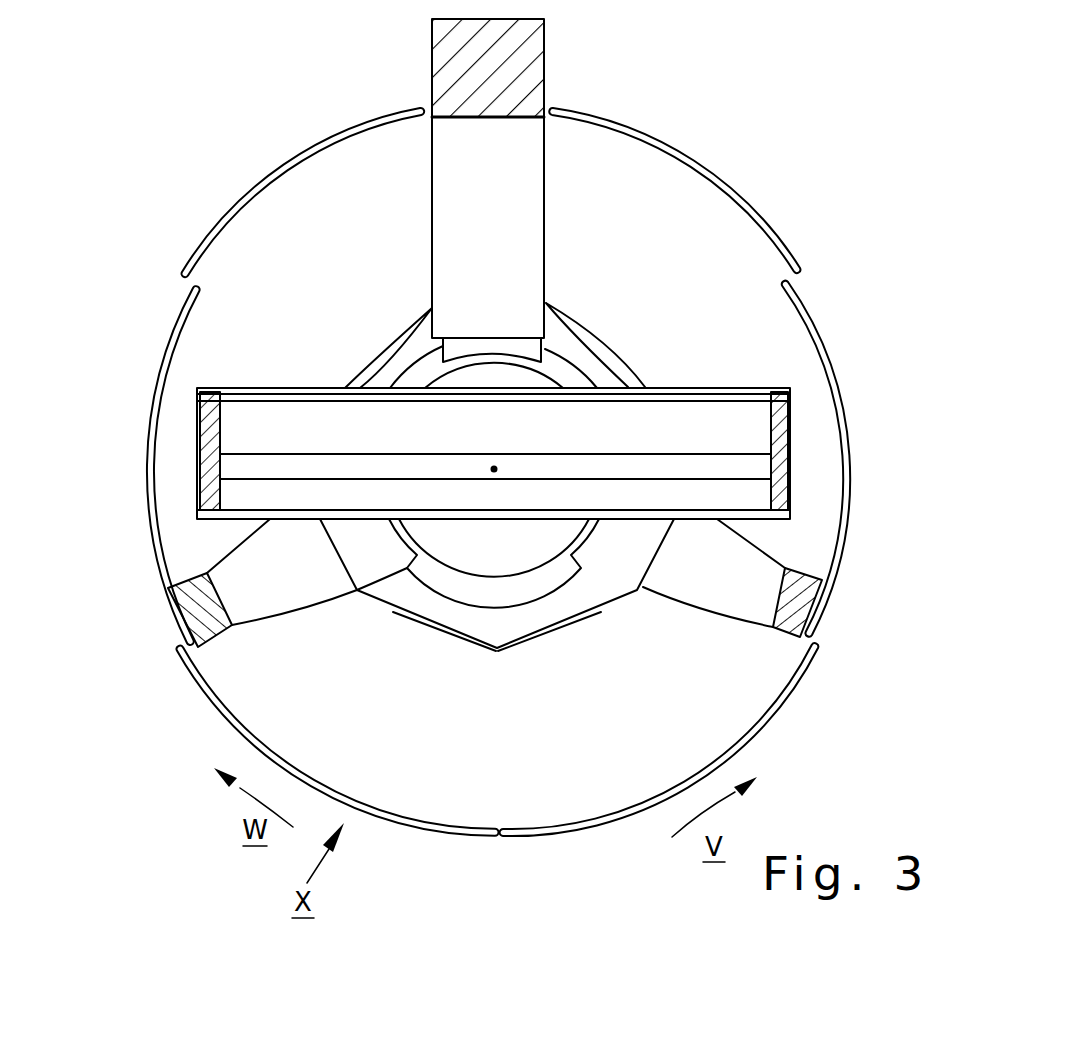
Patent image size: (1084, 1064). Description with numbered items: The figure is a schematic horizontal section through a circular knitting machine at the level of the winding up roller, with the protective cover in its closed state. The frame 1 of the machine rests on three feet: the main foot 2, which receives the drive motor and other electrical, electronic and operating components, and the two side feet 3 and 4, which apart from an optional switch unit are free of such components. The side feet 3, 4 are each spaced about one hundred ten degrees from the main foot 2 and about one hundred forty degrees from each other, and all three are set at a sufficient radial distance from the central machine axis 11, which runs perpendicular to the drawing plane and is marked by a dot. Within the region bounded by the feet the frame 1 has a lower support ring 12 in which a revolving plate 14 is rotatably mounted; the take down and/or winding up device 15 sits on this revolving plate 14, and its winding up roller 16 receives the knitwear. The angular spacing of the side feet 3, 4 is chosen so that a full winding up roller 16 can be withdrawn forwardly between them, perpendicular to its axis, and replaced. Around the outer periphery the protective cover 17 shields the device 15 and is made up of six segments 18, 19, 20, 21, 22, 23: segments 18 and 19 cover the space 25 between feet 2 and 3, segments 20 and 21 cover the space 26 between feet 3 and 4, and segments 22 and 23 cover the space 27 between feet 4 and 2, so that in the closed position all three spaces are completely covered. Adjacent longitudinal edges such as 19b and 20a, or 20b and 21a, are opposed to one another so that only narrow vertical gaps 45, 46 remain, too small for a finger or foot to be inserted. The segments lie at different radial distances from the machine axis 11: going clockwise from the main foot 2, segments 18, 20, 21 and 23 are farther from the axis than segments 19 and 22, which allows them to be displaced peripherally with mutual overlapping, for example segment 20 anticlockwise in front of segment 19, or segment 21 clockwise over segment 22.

The frame 1 is at (363, 630).
The main foot 2 is at (544, 35).
The side foot 3 is at (818, 572).
The side foot 4 is at (168, 590).
The machine axis 11 is at (493, 470).
The lower support ring 12 is at (519, 618).
The revolving plate 14 is at (524, 548).
The take down and/or winding up device 15 is at (264, 368).
The winding up roller 16 is at (688, 465).
The protective cover 17 is at (647, 106).
The segment 18 is at (733, 190).
The segment 19 is at (826, 340).
The longitudinal edge 19b is at (820, 622).
The segment 20 is at (752, 740).
The longitudinal edge 20a is at (823, 656).
The longitudinal edge 20b is at (500, 838).
The segment 21 is at (198, 688).
The longitudinal edge 21a is at (462, 837).
The segment 22 is at (170, 342).
The segment 23 is at (310, 148).
The space 25 is at (718, 260).
The space 26 is at (547, 753).
The space 27 is at (317, 268).
The vertical gap 45 is at (498, 835).
The vertical gap 46 is at (822, 650).